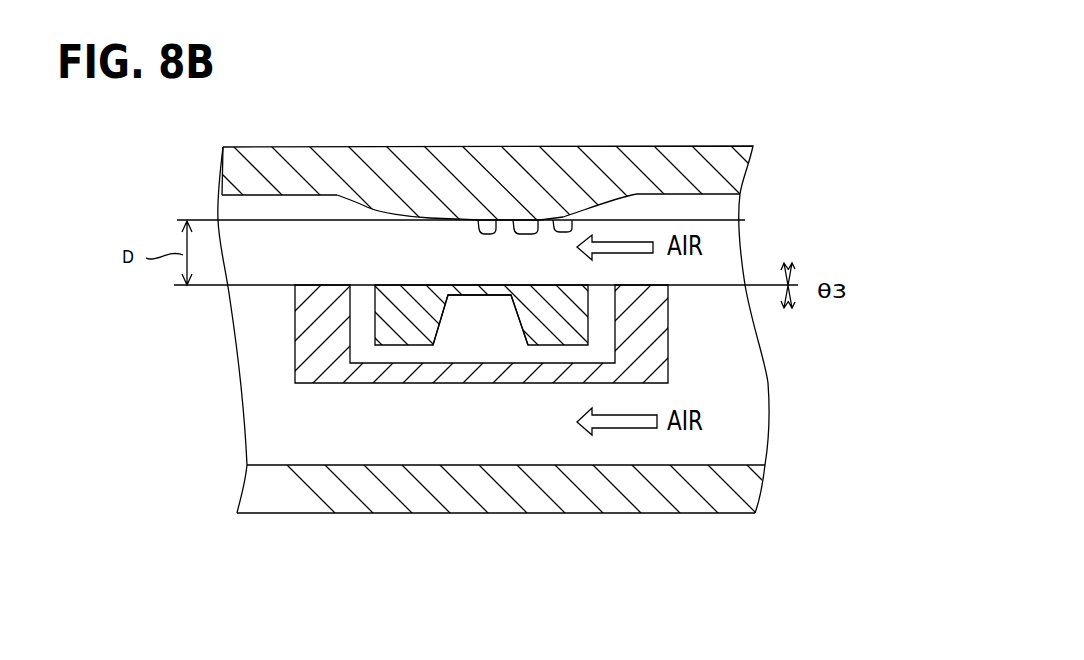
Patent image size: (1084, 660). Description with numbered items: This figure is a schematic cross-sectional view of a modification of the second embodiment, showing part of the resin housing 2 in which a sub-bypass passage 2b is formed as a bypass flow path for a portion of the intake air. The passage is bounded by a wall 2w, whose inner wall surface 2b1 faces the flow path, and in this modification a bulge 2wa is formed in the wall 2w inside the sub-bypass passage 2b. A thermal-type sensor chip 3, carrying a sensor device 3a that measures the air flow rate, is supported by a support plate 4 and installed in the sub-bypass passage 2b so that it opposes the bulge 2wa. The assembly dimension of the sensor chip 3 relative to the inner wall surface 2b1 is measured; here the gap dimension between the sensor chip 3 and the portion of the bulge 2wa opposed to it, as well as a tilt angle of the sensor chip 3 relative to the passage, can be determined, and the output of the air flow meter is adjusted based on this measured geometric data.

The resin housing 2 is at (653, 177).
The sub-bypass passage 2b is at (708, 213).
The inner wall surface 2b1 is at (490, 218).
The wall 2w is at (578, 215).
The bulge 2wa is at (527, 220).
The sensor chip 3 is at (545, 285).
The sensor device 3a is at (476, 285).
The support plate 4 is at (325, 285).